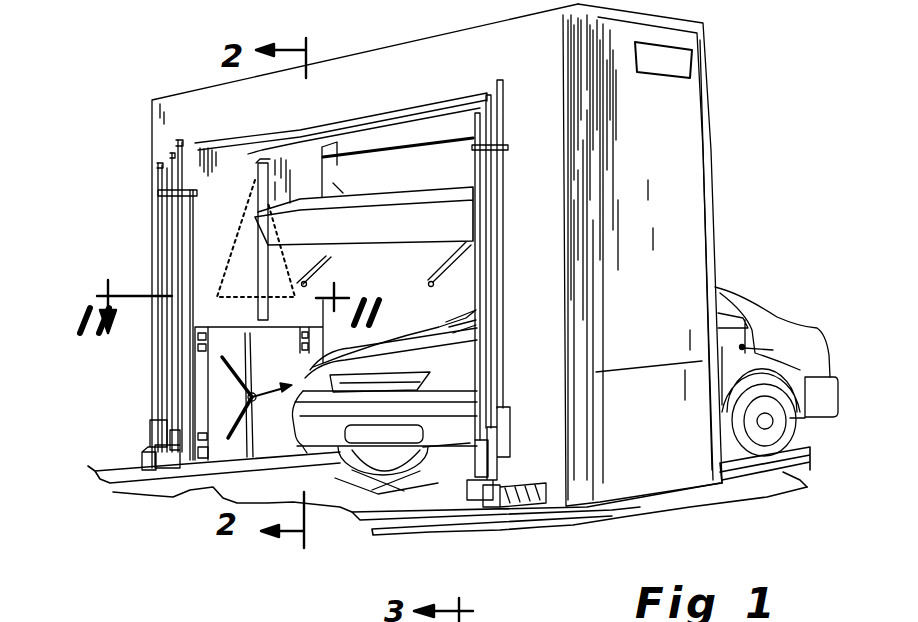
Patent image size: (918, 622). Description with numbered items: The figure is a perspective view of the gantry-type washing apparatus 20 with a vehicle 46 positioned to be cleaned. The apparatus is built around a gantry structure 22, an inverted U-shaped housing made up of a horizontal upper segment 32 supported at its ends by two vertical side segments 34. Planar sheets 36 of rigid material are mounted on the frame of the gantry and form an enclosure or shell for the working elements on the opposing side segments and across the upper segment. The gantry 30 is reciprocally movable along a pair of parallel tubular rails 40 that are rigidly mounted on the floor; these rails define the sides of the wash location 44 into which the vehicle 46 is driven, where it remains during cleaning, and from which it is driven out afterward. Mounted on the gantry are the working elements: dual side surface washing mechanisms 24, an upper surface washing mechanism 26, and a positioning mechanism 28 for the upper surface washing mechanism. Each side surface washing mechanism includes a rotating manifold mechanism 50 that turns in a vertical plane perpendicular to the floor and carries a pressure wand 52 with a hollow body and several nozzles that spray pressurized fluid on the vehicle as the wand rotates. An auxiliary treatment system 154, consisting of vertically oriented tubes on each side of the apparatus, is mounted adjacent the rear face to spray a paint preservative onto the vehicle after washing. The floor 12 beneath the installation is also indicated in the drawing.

The floor 12 is at (114, 495).
The washing apparatus 20 is at (805, 110).
The gantry structure 22 is at (672, 14).
The side surface washing mechanisms 24 is at (236, 392).
The upper surface washing mechanism 26 is at (244, 220).
The positioning mechanism 28 is at (220, 195).
The gantry 30 is at (714, 230).
The horizontal upper segment 32 is at (470, 30).
The vertical side segments 34 is at (683, 258).
The planar sheets 36 is at (565, 203).
The tubular rails 40 is at (787, 473).
The wash location 44 is at (428, 490).
The vehicle 46 is at (740, 347).
The rotating manifold mechanism 50 is at (351, 184).
The pressure wand 52 is at (370, 170).
The auxiliary treatment system 154 is at (523, 350).